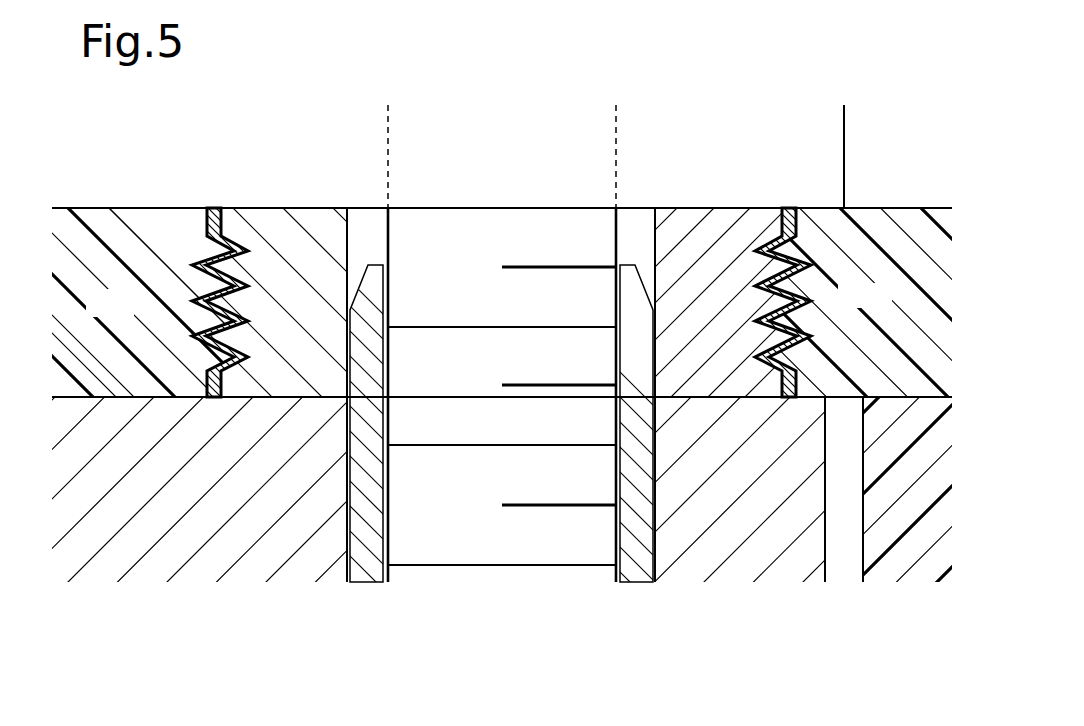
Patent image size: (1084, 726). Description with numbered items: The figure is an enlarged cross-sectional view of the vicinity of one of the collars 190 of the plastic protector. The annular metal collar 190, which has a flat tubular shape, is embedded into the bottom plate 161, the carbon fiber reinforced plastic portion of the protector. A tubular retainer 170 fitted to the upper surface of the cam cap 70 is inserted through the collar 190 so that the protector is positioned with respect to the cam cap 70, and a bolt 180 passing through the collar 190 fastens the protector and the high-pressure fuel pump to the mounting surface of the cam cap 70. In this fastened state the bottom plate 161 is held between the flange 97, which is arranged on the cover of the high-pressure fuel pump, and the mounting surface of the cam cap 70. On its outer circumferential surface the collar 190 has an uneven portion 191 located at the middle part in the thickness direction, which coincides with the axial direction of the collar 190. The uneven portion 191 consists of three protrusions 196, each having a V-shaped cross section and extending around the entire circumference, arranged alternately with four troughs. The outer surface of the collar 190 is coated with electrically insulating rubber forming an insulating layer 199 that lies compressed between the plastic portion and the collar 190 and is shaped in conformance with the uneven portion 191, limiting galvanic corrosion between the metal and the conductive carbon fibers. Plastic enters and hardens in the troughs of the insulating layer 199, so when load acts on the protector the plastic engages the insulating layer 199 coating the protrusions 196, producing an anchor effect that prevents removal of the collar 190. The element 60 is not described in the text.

The valve body 60 is at (919, 580).
The cam cap 70 is at (204, 580).
The flange 97 is at (835, 163).
The bottom plate 161 is at (137, 209).
The retainer 170 is at (644, 587).
The bolt 180 is at (383, 229).
The collar 190 is at (718, 209).
The uneven portion 191 is at (180, 308).
The protrusion 196 is at (797, 286).
The insulating layer 199 is at (214, 209).